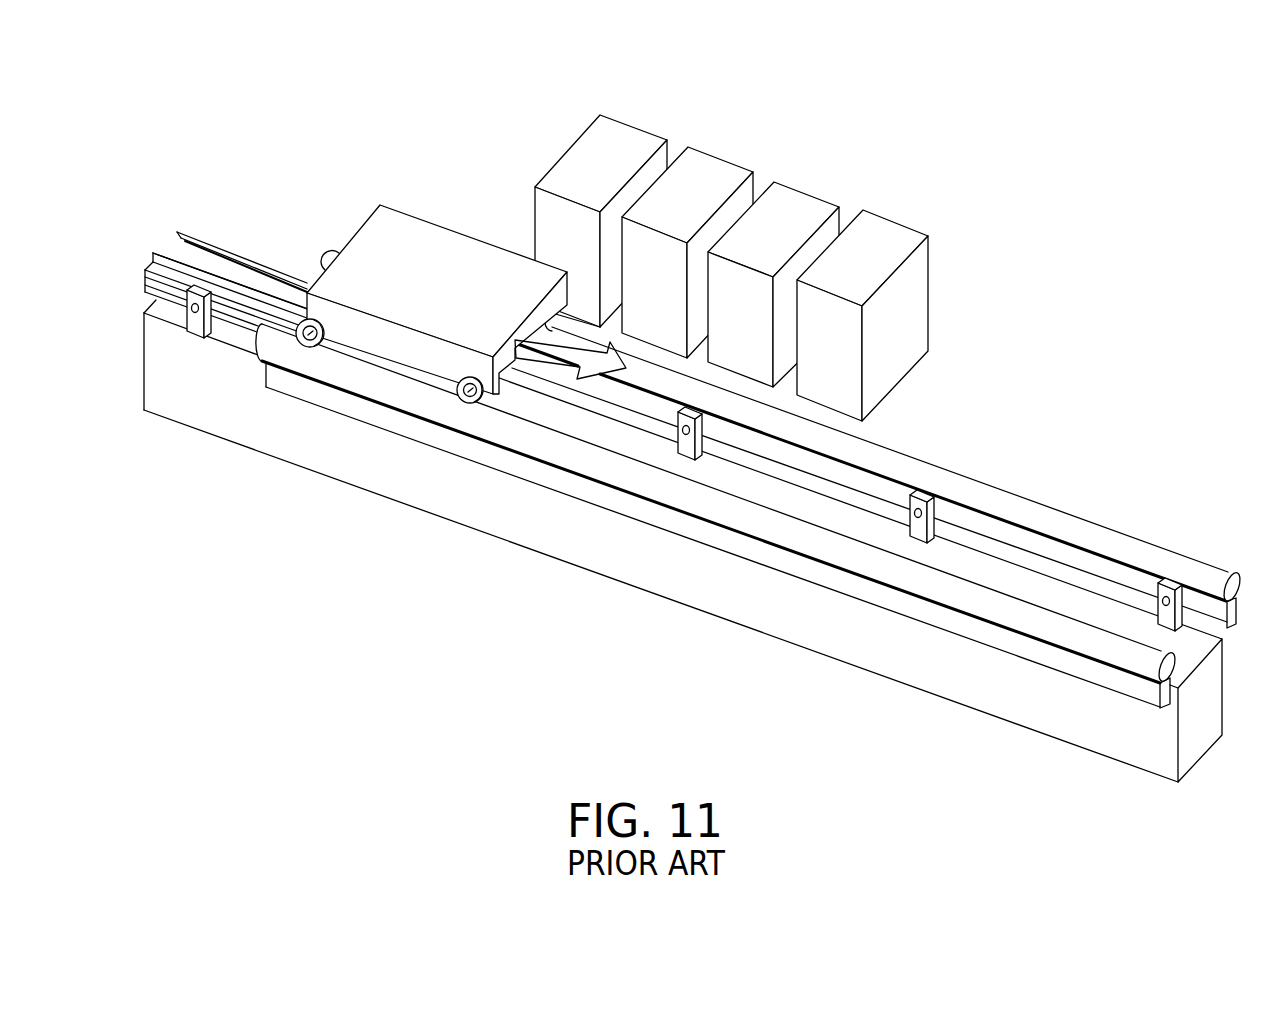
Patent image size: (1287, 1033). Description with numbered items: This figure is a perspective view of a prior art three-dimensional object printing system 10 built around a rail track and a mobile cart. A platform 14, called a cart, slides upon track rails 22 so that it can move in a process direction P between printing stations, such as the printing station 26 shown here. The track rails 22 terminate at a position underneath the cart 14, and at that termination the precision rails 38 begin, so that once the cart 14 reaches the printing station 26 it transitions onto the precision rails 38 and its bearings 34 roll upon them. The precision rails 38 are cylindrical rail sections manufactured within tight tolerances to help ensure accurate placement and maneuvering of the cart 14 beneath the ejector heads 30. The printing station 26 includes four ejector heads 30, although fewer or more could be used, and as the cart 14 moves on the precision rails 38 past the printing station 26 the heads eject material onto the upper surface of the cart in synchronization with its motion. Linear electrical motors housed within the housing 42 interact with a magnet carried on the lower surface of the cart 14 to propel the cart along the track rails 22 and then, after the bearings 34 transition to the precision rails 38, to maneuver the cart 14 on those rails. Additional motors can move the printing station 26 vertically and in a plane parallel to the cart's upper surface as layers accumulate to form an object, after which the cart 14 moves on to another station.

The three-dimensional object printing system 10 is at (312, 640).
The platform 14 is at (433, 223).
The track rails 22 is at (152, 250).
The printing station 26 is at (769, 257).
The ejector heads 30 is at (934, 228).
The bearings 34 is at (300, 340).
The precision rails 38 is at (1015, 497).
The housing 42 is at (965, 667).
The process direction P is at (557, 368).